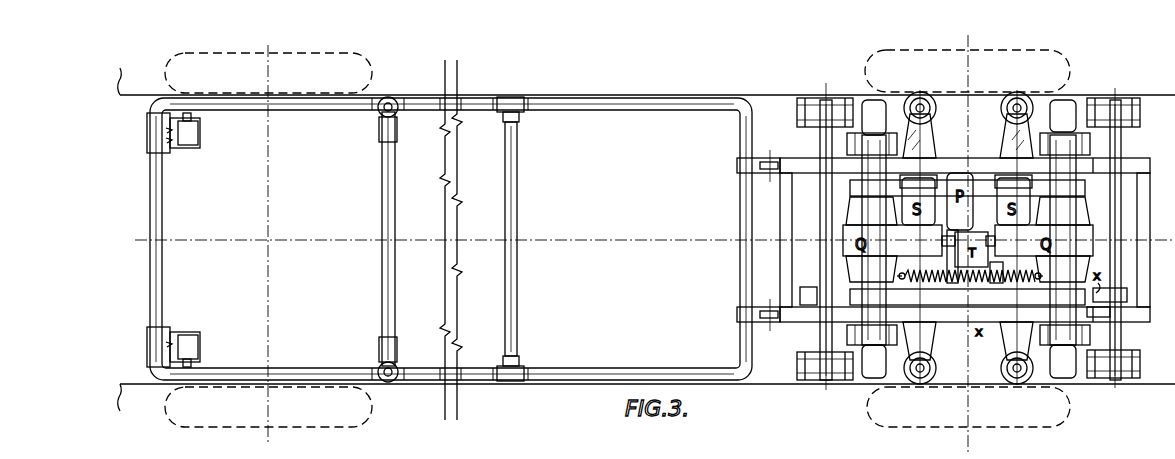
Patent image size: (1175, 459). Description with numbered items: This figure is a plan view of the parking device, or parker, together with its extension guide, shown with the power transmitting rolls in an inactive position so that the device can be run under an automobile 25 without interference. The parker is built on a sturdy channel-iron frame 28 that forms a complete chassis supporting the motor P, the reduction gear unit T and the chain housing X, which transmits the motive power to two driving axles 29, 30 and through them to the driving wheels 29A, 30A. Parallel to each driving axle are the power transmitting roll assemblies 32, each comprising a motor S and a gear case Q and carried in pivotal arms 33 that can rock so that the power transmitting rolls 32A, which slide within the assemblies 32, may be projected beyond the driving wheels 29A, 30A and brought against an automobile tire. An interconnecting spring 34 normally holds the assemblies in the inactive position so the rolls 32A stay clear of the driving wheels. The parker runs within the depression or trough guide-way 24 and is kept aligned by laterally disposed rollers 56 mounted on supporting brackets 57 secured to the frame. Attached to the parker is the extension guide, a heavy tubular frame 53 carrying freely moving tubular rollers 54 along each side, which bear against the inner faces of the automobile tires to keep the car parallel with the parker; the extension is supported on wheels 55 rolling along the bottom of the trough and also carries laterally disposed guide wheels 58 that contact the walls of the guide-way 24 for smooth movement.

The guide-way 24 is at (140, 95).
The automobile 25 is at (169, 60).
The frame 28 is at (785, 224).
The driving axle 29 is at (1128, 184).
The driving wheel 29A is at (1122, 108).
The driving axle 30 is at (826, 195).
The driving wheel 30A is at (800, 110).
The power transmitting roll assembly 32 is at (845, 210).
The power transmitting roll 32A is at (866, 100).
The pivotal arm 33 is at (887, 138).
The interconnecting spring 34 is at (928, 270).
The tubular frame 53 is at (140, 211).
The tubular roller 54 is at (426, 102).
The wheel 55 is at (199, 137).
The roller or wheel 56 is at (1000, 104).
The supporting bracket 57 is at (1000, 148).
The guide wheel 58 is at (378, 114).